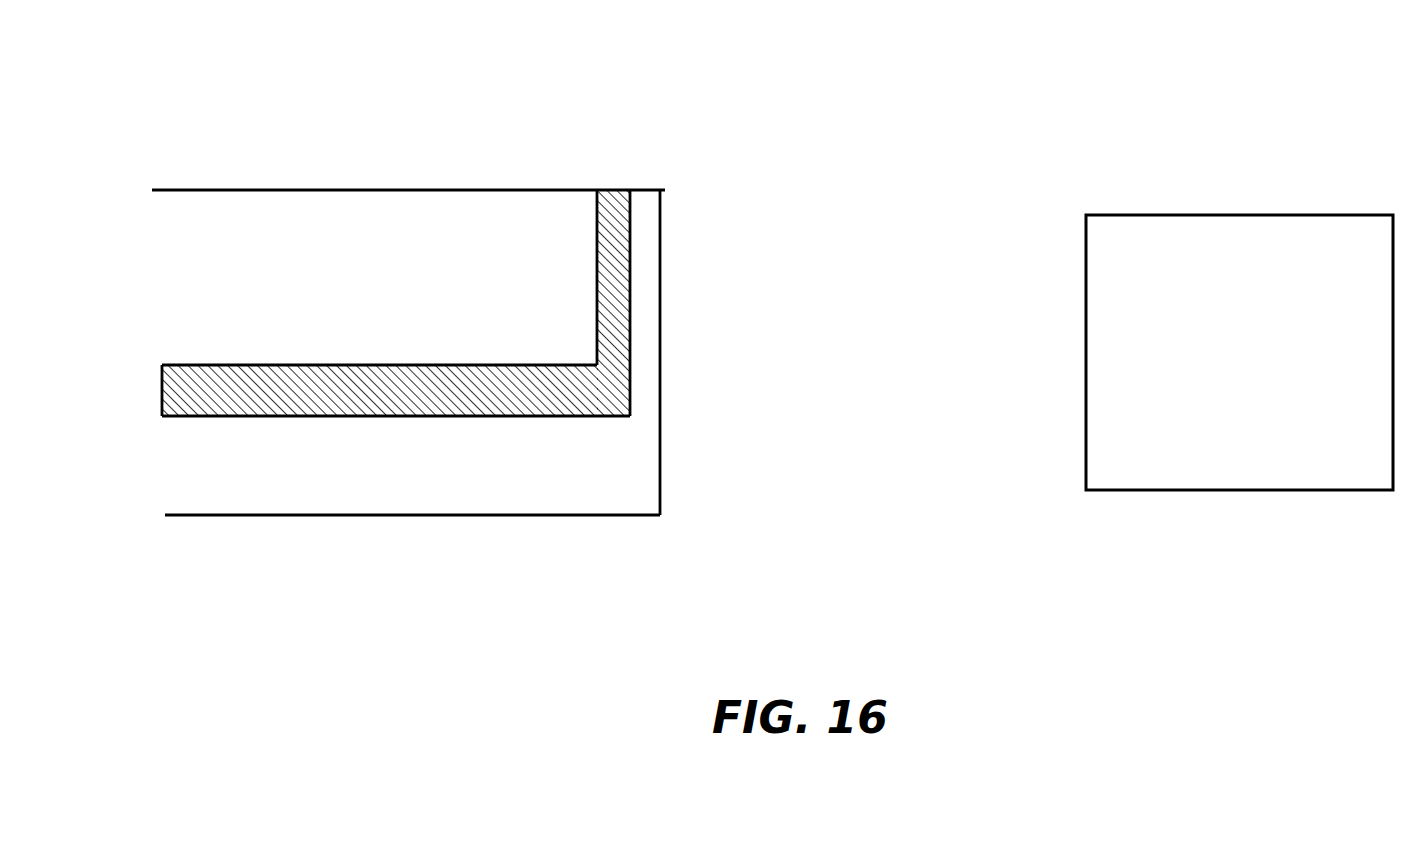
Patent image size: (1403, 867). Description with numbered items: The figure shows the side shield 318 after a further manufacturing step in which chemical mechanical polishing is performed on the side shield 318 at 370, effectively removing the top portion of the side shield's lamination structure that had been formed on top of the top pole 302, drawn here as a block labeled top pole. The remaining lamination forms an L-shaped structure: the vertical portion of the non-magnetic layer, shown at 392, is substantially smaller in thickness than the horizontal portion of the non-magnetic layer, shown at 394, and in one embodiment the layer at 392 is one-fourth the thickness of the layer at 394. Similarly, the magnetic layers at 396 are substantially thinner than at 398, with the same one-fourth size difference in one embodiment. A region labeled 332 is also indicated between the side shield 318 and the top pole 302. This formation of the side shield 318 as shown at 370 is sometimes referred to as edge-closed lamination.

The top pole 302 is at (1274, 319).
The side shield 318 is at (367, 165).
The gap region 332 is at (956, 240).
The chemical mechanical polishing location 370 is at (625, 139).
The vertical portion of the non-magnetic layer 392 is at (597, 302).
The horizontal portion of the non-magnetic layer 394 is at (262, 388).
The vertical portion of the magnetic layers 396 is at (640, 297).
The horizontal portion of the magnetic layers 398 is at (415, 488).